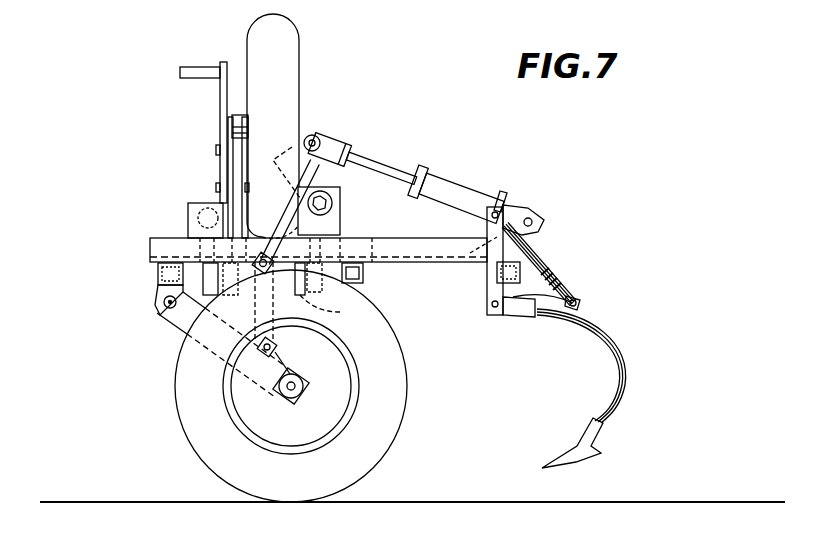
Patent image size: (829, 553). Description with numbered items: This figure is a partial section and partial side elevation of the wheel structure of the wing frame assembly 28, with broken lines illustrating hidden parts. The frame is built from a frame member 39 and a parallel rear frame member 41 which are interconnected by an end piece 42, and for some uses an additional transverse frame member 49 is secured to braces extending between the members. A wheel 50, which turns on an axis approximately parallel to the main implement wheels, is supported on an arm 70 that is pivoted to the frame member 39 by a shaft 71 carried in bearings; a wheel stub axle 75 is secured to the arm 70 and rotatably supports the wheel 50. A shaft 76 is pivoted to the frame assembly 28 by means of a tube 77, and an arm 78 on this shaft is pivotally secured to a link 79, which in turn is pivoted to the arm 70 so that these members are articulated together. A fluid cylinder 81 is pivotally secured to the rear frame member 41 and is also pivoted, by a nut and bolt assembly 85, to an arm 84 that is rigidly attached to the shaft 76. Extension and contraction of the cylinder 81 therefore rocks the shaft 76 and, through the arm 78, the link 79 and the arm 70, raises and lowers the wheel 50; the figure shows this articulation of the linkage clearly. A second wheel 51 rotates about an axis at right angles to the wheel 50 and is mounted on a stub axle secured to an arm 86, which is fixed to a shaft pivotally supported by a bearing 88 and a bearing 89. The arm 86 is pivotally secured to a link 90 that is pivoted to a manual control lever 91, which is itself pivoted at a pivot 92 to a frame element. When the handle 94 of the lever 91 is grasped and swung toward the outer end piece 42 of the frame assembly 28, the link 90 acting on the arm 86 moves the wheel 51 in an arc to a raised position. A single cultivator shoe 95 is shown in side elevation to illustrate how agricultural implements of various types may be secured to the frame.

The wing frame assembly 28 is at (162, 230).
The frame member 39 is at (158, 272).
The rear frame member 41 is at (497, 272).
The end piece 42 is at (427, 250).
The additional transverse frame member 49 is at (364, 276).
The wheel 50 is at (399, 428).
The wheel 51 is at (295, 48).
The arm 70 is at (187, 333).
The shaft 71 is at (163, 304).
The wheel stub axle 75 is at (291, 399).
The shaft 76 is at (335, 201).
The tube 77 is at (322, 170).
The arm 78 is at (302, 232).
The link 79 is at (255, 316).
The fluid cylinder 81 is at (454, 183).
The arm 84 is at (332, 148).
The nut and bolt assembly 85 is at (314, 136).
The arm 86 is at (239, 114).
The bearing 88 is at (328, 294).
The bearing 89 is at (227, 273).
The link 90 is at (228, 161).
The manual control lever 91 is at (221, 100).
The pivot 92 is at (218, 204).
The handle 94 is at (190, 67).
The cultivator shoe 95 is at (603, 327).